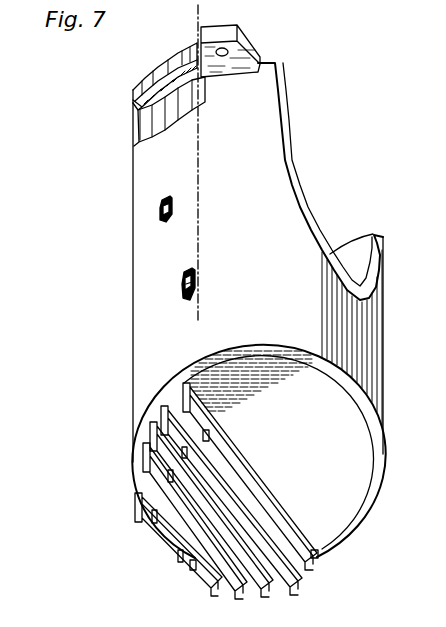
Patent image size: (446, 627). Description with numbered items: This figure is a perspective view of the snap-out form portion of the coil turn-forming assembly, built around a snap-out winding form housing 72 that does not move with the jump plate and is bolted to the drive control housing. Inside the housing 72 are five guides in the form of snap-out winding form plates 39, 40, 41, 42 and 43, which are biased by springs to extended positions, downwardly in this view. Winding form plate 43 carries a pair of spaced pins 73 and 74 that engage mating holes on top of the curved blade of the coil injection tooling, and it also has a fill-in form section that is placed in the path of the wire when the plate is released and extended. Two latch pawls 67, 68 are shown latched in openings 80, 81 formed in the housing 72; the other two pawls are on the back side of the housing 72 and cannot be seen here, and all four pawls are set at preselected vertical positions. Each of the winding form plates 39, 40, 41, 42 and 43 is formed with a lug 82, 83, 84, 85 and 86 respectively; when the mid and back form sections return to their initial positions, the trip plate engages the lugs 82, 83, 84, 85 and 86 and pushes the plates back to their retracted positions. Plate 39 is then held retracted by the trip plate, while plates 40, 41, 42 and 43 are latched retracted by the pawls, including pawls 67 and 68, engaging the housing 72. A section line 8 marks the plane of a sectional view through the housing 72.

The section line 8- 8 is at (201, 312).
The snap-out winding form plate 39 is at (147, 504).
The snap-out winding form plate 40 is at (148, 443).
The snap-out winding form plate 41 is at (158, 418).
The snap-out winding form plate 42 is at (172, 403).
The snap-out winding form plate 43 is at (193, 386).
The pawl 67 is at (172, 206).
The pawl 68 is at (190, 286).
The housing 72 is at (283, 165).
The pin 73 is at (208, 437).
The pin 74 is at (320, 560).
The opening 80 is at (162, 218).
The opening 81 is at (186, 300).
The lug 82 is at (133, 90).
The lug 83 is at (142, 83).
The lug 84 is at (153, 76).
The lug 85 is at (167, 65).
The lug 86 is at (188, 53).